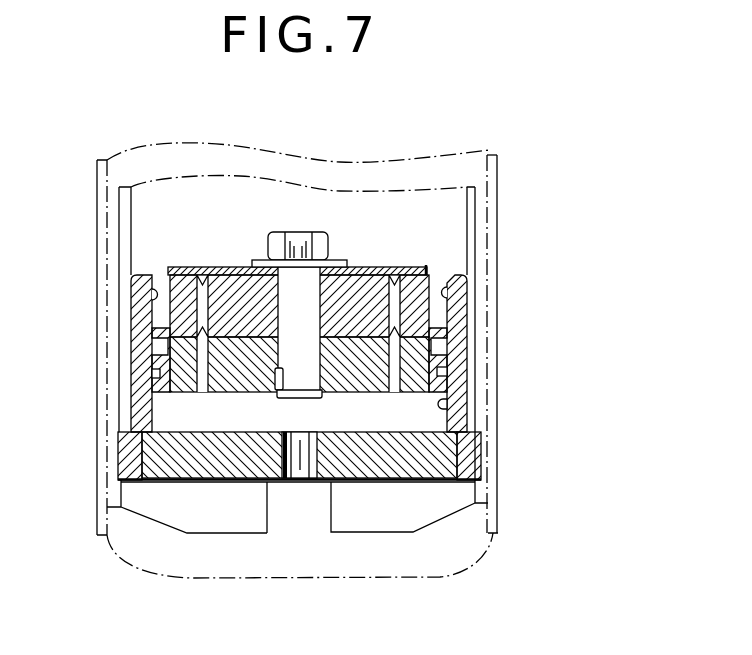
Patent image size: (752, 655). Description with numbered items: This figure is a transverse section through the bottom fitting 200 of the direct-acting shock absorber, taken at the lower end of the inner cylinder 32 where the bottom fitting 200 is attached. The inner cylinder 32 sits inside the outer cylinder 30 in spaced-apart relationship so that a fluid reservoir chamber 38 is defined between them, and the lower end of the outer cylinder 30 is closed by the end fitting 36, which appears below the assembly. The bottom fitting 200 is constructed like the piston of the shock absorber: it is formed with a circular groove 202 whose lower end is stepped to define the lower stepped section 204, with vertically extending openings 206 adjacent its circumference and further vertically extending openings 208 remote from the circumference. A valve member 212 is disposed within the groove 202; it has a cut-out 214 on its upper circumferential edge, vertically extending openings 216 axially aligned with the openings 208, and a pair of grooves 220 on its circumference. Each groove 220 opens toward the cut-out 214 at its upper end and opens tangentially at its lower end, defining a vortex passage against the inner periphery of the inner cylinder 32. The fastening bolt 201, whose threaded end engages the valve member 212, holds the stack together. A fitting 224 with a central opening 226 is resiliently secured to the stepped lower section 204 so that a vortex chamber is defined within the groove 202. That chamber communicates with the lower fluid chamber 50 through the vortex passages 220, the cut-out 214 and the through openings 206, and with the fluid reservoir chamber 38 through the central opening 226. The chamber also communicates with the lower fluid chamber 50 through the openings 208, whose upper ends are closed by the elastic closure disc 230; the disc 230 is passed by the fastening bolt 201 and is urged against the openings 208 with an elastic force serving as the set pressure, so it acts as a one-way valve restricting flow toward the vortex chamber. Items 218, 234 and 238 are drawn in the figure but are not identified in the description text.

The outer cylinder 30 is at (500, 249).
The inner cylinder 32 is at (128, 277).
The end fitting 36 is at (251, 568).
The fluid reservoir chamber 38 is at (113, 222).
The lower fluid chamber 50 is at (375, 205).
The bottom fitting 200 is at (463, 310).
The fastening bolt 201 is at (301, 238).
The circular groove 202 is at (440, 403).
The lower stepped section 204 is at (455, 448).
The vertically extending openings 206 is at (148, 296).
The vertically extending openings 208 is at (167, 267).
The valve member 212 is at (142, 453).
The cut-out 214 is at (158, 349).
The vertically extending opening 216 is at (152, 374).
The retainer 218 is at (277, 393).
The grooves 220 is at (150, 378).
The fitting 224 is at (409, 480).
The central opening 226 is at (301, 465).
The closure disc 230 is at (390, 267).
The washer 234 is at (340, 248).
The slot 238 is at (204, 283).